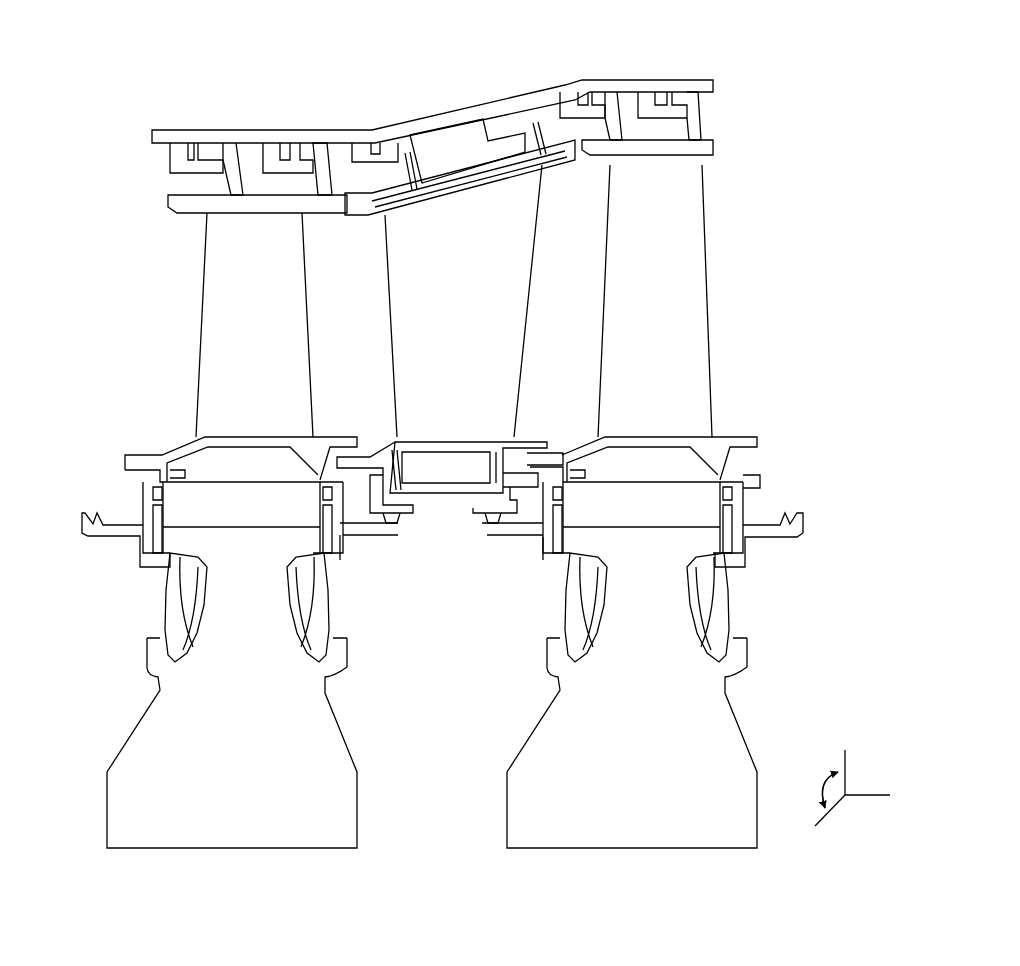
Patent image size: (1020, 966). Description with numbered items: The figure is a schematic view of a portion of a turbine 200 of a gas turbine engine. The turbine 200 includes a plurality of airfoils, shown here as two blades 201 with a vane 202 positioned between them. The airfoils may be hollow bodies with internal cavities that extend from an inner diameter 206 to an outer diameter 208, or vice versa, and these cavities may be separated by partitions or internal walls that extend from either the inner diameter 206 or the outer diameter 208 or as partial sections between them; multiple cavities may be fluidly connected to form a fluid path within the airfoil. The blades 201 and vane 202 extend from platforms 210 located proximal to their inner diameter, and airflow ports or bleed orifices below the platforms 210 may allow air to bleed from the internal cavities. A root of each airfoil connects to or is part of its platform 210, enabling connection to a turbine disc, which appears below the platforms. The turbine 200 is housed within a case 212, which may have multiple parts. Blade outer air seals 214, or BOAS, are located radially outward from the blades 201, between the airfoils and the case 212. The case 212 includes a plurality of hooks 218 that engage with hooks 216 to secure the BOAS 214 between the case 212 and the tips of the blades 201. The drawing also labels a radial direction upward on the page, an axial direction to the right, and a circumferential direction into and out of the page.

The turbine 200 is at (115, 33).
The blade 201 is at (303, 260).
The vane 202 is at (511, 247).
The inner diameter 206 is at (380, 428).
The outer diameter 208 is at (165, 238).
The platform 210 is at (531, 440).
The case 212 is at (468, 113).
The blade outer air seal 214 is at (243, 202).
The hook 216 is at (228, 160).
The hook 218 is at (173, 152).